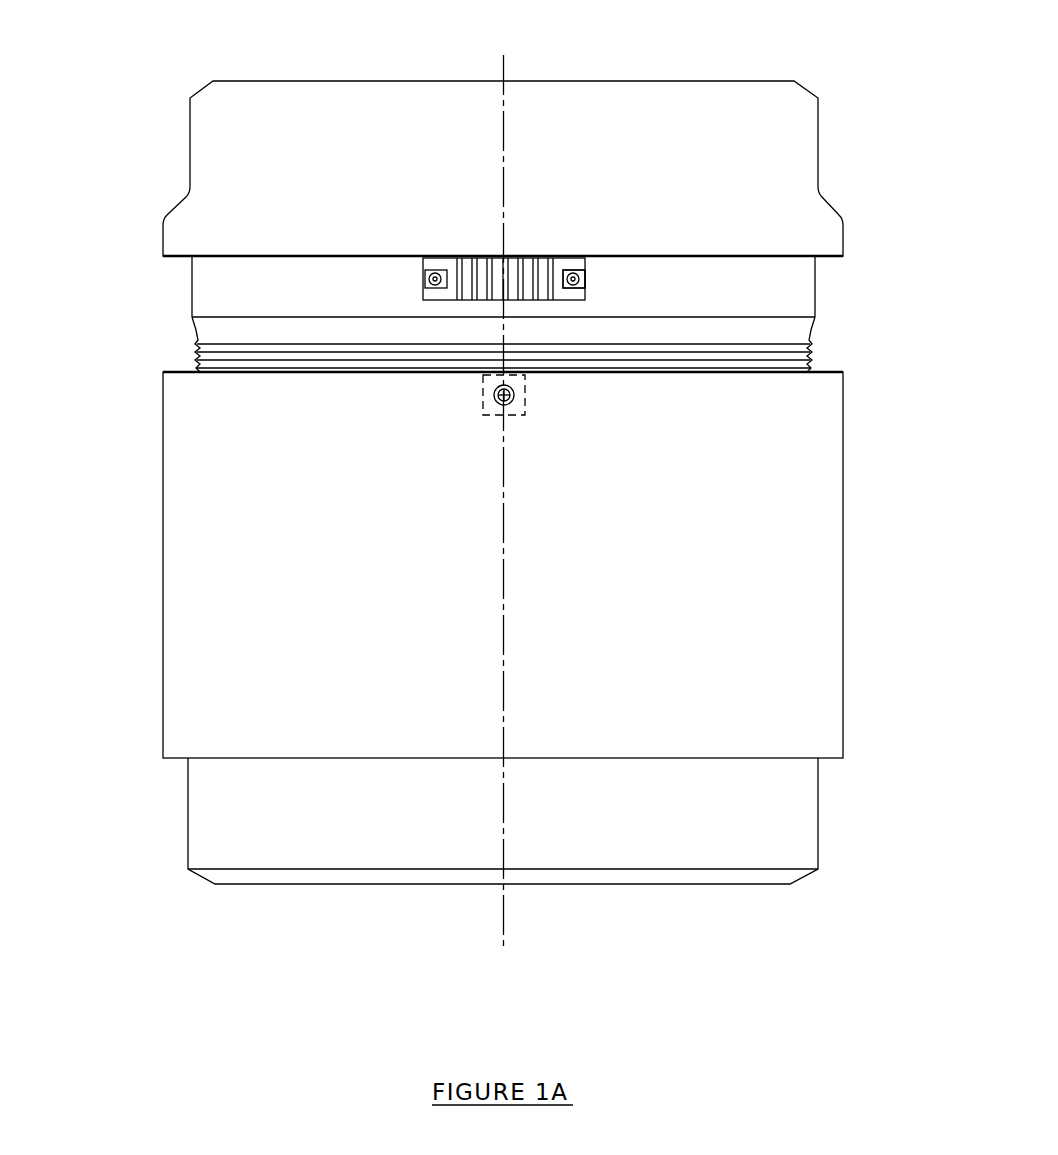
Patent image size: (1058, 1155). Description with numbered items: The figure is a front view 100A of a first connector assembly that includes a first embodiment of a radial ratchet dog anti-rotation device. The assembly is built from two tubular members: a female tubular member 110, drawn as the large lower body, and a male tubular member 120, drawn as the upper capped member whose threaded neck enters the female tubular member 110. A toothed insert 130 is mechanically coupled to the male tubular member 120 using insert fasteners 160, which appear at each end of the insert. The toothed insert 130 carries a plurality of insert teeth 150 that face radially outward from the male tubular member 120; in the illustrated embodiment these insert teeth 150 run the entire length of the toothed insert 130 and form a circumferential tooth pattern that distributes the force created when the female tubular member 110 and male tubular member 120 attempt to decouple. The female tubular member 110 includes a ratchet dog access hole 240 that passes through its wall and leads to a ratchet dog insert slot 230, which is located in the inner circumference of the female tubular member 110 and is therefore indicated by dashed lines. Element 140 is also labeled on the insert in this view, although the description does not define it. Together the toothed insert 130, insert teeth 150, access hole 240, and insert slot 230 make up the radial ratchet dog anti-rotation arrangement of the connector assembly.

The front view 100A is at (150, 1001).
The female tubular member 110 is at (561, 570).
The male tubular member 120 is at (561, 158).
The toothed insert 130 is at (691, 303).
The connector housing 140 is at (761, 236).
The insert teeth 150 is at (554, 163).
The insert fasteners 160 is at (316, 355).
The ratchet dog insert slot 230 is at (283, 447).
The ratchet dog access hole 240 is at (726, 432).